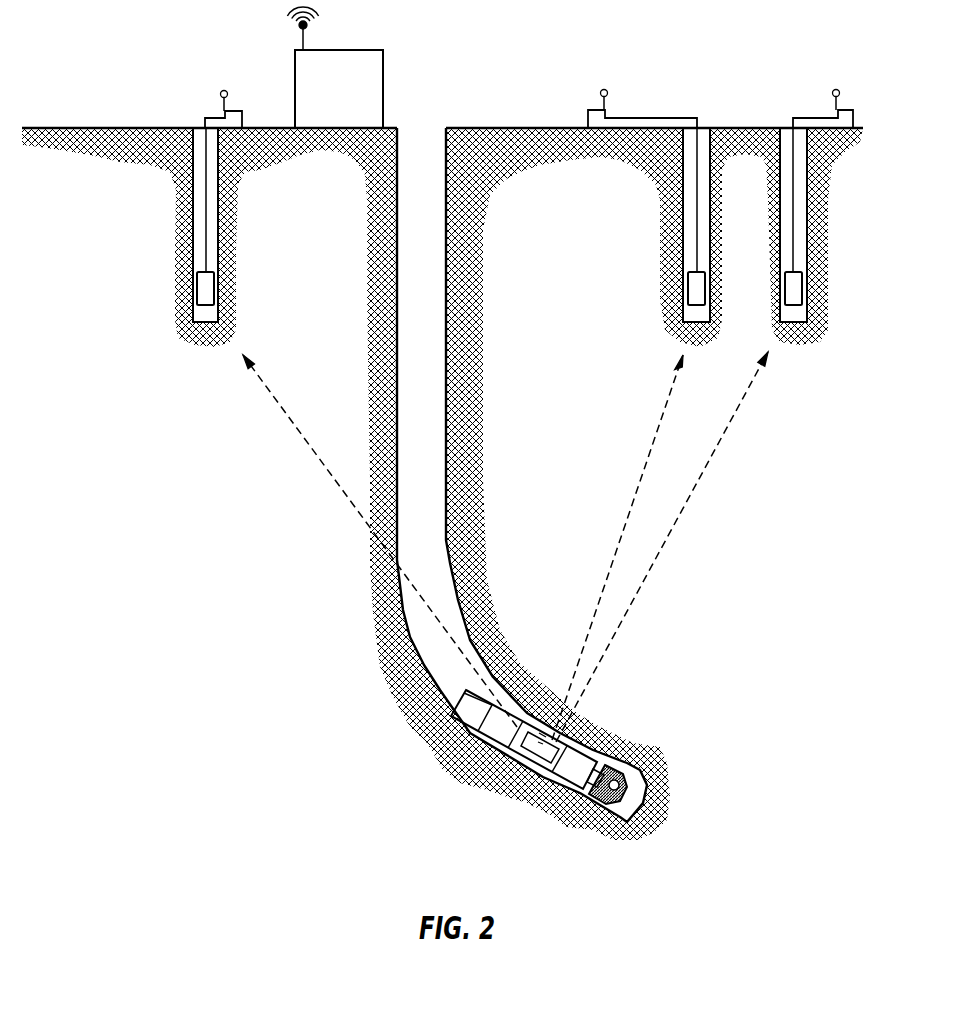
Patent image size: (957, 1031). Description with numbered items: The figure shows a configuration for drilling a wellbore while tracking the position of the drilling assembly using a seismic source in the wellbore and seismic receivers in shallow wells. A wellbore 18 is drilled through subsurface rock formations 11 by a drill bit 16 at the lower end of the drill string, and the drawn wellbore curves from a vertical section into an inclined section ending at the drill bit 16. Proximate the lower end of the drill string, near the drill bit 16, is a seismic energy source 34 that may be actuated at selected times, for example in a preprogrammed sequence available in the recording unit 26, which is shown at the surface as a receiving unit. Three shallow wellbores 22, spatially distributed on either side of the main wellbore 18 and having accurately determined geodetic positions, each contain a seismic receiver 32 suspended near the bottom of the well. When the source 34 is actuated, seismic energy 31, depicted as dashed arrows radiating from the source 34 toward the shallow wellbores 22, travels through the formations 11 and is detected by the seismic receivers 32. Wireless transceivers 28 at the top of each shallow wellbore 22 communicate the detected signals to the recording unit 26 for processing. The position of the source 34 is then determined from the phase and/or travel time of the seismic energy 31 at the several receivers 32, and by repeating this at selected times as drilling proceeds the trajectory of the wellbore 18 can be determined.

The subsurface rock formations 11 is at (512, 173).
The drill bit 16 is at (592, 812).
The wellbore 18 is at (408, 377).
The shallow wellbores 22 is at (202, 222).
The recording unit 26 is at (340, 50).
The wireless transceivers 28 is at (228, 111).
The seismic energy 31 is at (308, 445).
The seismic receivers 32 is at (198, 290).
The seismic energy source 34 is at (523, 780).